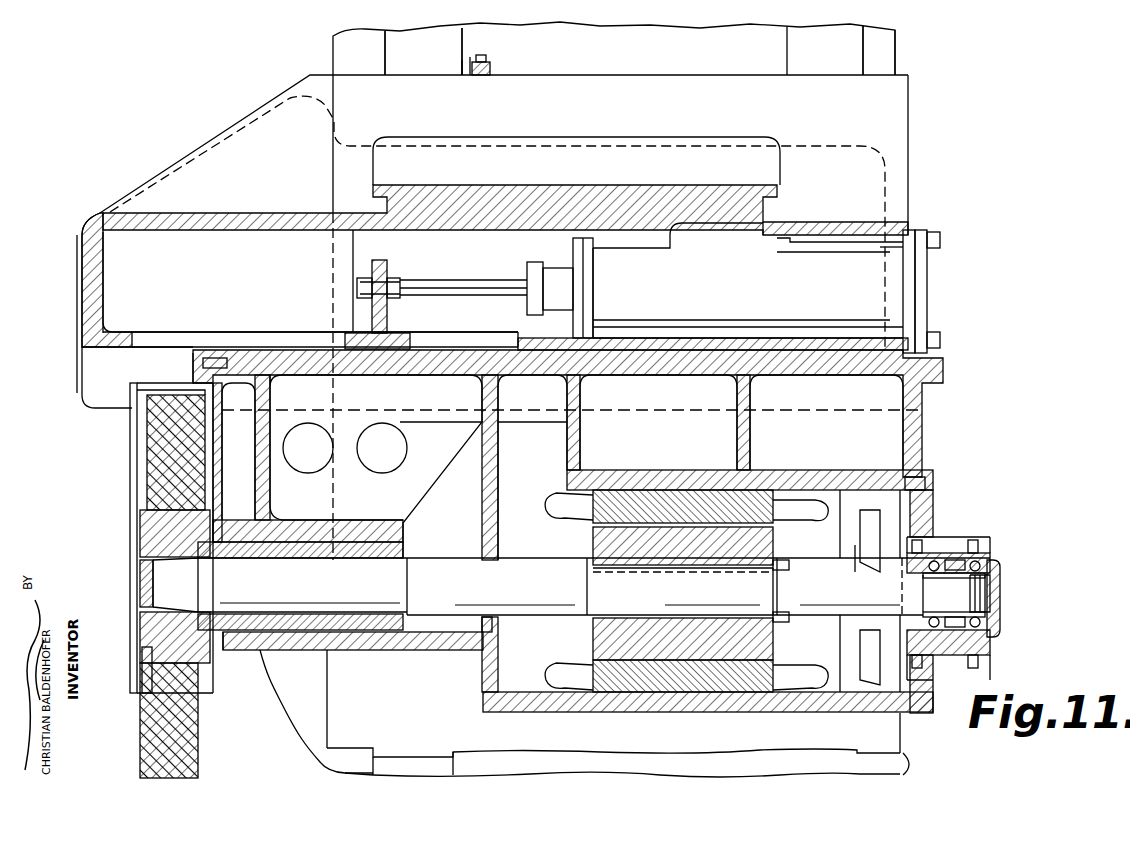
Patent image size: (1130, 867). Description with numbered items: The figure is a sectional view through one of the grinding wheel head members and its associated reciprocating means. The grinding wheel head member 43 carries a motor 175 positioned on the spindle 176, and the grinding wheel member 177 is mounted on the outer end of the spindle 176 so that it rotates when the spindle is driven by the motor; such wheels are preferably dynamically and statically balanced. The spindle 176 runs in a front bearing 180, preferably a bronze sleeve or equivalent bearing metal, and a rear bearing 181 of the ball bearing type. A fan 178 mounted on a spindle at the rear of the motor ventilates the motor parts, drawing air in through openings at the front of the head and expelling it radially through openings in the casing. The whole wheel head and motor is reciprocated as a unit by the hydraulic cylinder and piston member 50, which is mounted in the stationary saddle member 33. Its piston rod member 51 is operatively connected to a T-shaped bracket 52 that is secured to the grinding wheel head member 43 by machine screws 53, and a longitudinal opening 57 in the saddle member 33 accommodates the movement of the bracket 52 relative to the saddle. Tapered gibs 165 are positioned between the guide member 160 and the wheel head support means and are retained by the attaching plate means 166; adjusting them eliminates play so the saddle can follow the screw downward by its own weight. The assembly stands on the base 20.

The base 20 is at (908, 757).
The stationary saddle member 33 is at (178, 168).
The grinding wheel head member 43 is at (258, 365).
The hydraulic cylinder and piston member 50 is at (895, 288).
The piston rod member 51 is at (450, 288).
The T-shaped bracket 52 is at (386, 264).
The machine screws 53 is at (401, 336).
The longitudinal opening 57 is at (207, 339).
The guide member 160 is at (453, 40).
The tapered gibs 165 is at (462, 71).
The attaching plate means 166 is at (489, 63).
The motor 175 is at (596, 538).
The spindle 176 is at (433, 580).
The grinding wheel member 177 is at (150, 462).
The fan 178 is at (868, 517).
The front bearing 180 is at (352, 540).
The rear bearing 181 is at (993, 563).